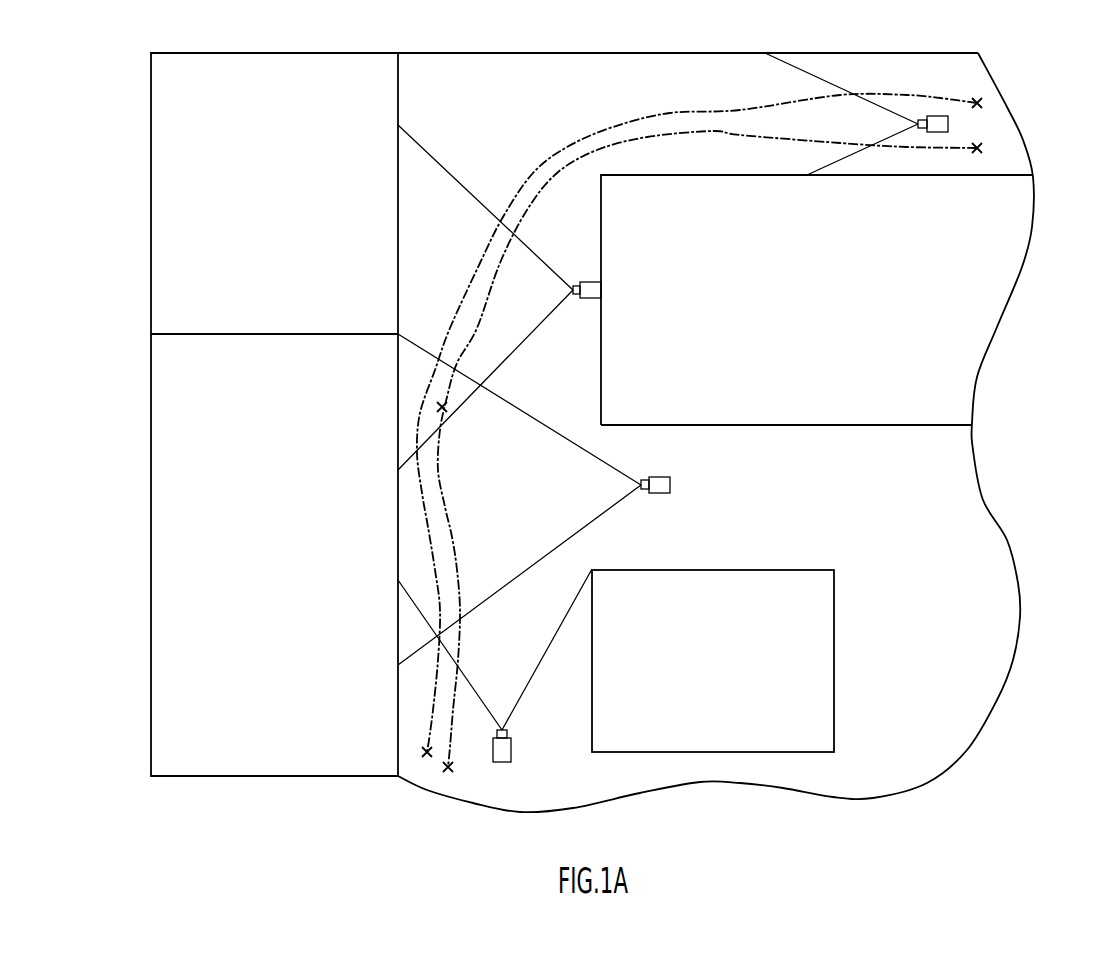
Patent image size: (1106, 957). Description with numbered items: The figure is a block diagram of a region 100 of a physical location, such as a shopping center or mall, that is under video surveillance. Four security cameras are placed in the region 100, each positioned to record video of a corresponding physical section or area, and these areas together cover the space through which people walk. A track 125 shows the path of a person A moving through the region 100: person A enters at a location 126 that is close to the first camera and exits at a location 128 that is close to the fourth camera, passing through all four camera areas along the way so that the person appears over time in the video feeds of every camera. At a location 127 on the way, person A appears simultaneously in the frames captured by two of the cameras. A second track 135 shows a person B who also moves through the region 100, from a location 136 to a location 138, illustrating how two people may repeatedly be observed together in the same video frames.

The region 100 is at (978, 53).
The track 125 is at (673, 138).
The track 135 is at (673, 112).
The location 126 is at (982, 150).
The location 127 is at (447, 409).
The location 128 is at (448, 771).
The location 136 is at (982, 106).
The location 138 is at (422, 752).